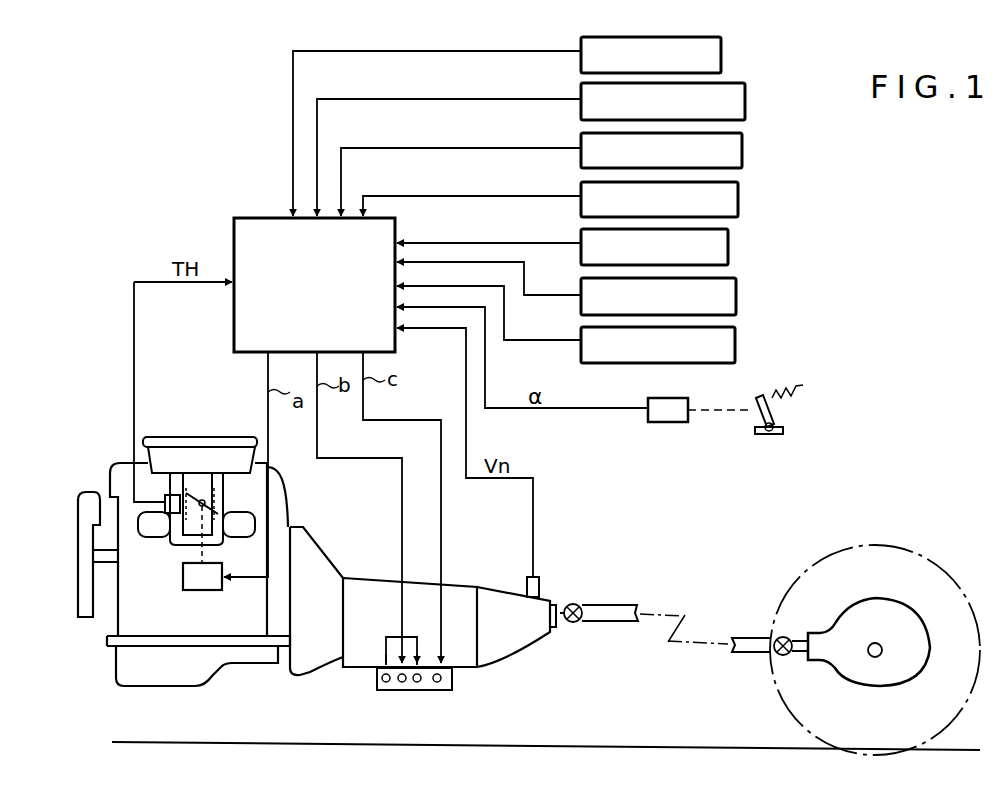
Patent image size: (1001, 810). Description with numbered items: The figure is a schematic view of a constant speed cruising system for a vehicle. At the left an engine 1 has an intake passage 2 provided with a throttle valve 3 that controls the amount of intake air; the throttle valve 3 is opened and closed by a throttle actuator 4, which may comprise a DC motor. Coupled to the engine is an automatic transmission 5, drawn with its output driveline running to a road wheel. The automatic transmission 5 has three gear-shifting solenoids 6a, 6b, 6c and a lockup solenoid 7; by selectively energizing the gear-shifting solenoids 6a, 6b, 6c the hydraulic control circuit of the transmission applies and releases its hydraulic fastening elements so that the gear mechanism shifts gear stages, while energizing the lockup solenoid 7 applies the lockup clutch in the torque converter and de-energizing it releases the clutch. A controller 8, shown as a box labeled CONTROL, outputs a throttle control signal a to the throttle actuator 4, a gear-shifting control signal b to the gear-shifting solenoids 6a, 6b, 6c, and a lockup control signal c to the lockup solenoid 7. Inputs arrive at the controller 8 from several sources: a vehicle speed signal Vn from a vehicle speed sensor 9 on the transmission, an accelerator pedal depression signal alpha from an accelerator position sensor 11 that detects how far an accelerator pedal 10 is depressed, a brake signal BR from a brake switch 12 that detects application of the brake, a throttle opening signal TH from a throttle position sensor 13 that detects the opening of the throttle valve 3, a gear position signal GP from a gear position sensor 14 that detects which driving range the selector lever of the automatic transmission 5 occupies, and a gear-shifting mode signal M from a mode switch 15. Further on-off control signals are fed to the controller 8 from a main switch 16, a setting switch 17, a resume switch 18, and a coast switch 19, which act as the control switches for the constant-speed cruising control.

The engine 1 is at (104, 463).
The intake passage 2 is at (206, 470).
The throttle valve 3 is at (224, 508).
The throttle actuator 4 is at (183, 572).
The automatic transmission 5 is at (370, 576).
The gear-shifting solenoid 6a is at (383, 690).
The gear-shifting solenoid 6b is at (401, 690).
The gear-shifting solenoid 6c is at (420, 690).
The lockup solenoid 7 is at (452, 688).
The controller 8 is at (257, 218).
The vehicle speed sensor 9 is at (540, 583).
The accelerator pedal 10 is at (785, 414).
The accelerator position sensor 11 is at (672, 422).
The brake switch 12 is at (737, 342).
The throttle position sensor 13 is at (166, 495).
The gear position sensor 14 is at (738, 293).
The mode switch 15 is at (730, 245).
The main switch 16 is at (723, 56).
The setting switch 17 is at (747, 102).
The resume switch 18 is at (744, 150).
The coast switch 19 is at (740, 198).